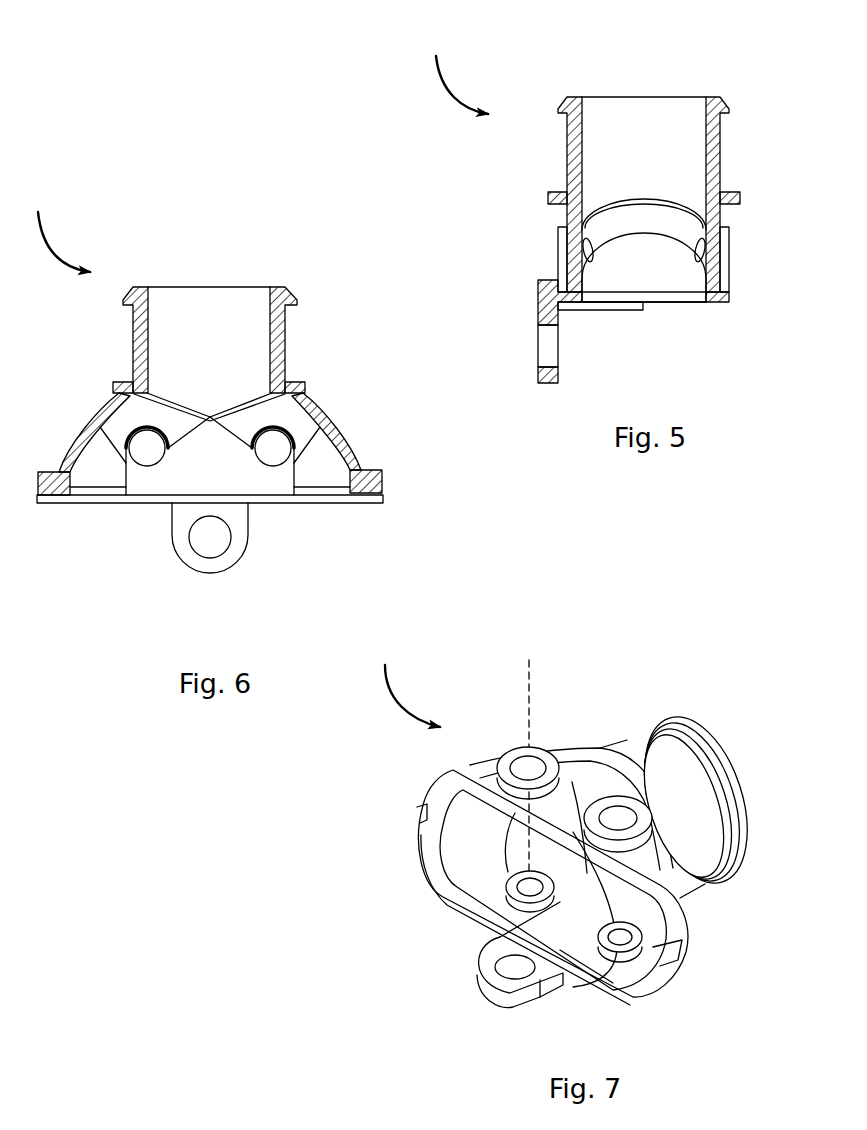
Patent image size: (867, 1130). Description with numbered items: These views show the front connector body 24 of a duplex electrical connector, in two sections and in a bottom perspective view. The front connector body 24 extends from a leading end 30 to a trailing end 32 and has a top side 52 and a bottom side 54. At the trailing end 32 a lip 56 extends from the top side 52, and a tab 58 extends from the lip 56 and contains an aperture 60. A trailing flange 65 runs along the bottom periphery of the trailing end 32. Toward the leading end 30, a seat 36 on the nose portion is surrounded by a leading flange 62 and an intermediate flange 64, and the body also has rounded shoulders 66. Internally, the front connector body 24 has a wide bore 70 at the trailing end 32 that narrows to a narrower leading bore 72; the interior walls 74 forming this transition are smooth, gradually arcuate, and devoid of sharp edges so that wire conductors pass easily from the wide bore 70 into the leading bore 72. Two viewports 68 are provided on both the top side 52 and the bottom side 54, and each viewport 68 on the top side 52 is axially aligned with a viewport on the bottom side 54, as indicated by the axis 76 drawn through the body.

In FIG. 5, the front connector body 24 is at (456, 72).
In FIG. 6, the front connector body 24 is at (59, 229).
In FIG. 7, the front connector body 24 is at (407, 684).
In FIG. 5, the leading end 30 is at (644, 97).
In FIG. 6, the leading end 30 is at (210, 287).
In FIG. 7, the leading end 30 is at (716, 746).
In FIG. 5, the trailing end 32 is at (683, 303).
In FIG. 6, the trailing end 32 is at (80, 504).
In FIG. 7, the seat 36 is at (682, 813).
In FIG. 5, the top side 52 is at (558, 255).
In FIG. 5, the bottom side 54 is at (729, 248).
In FIG. 7, the bottom side 54 is at (564, 813).
In FIG. 5, the lip 56 is at (600, 311).
In FIG. 6, the lip 56 is at (383, 488).
In FIG. 7, the lip 56 is at (668, 970).
In FIG. 5, the tab 58 is at (548, 384).
In FIG. 6, the tab 58 is at (230, 565).
In FIG. 7, the tab 58 is at (487, 990).
In FIG. 5, the aperture 60 is at (548, 345).
In FIG. 6, the aperture 60 is at (210, 537).
In FIG. 7, the leading flange 62 is at (733, 863).
In FIG. 7, the intermediate flange 64 is at (688, 893).
In FIG. 5, the trailing flange 65 is at (729, 299).
In FIG. 7, the trailing flange 65 is at (552, 810).
In FIG. 7, the rounded shoulders 66 is at (672, 917).
In FIG. 7, the viewports 68 is at (520, 768).
In FIG. 5, the wide bore 70 is at (633, 278).
In FIG. 6, the wide bore 70 is at (196, 480).
In FIG. 7, the wide bore 70 is at (560, 905).
In FIG. 5, the leading bore 72 is at (633, 153).
In FIG. 6, the leading bore 72 is at (197, 353).
In FIG. 6, the interior walls 74 is at (332, 457).
In FIG. 7, the axis 76 is at (534, 687).